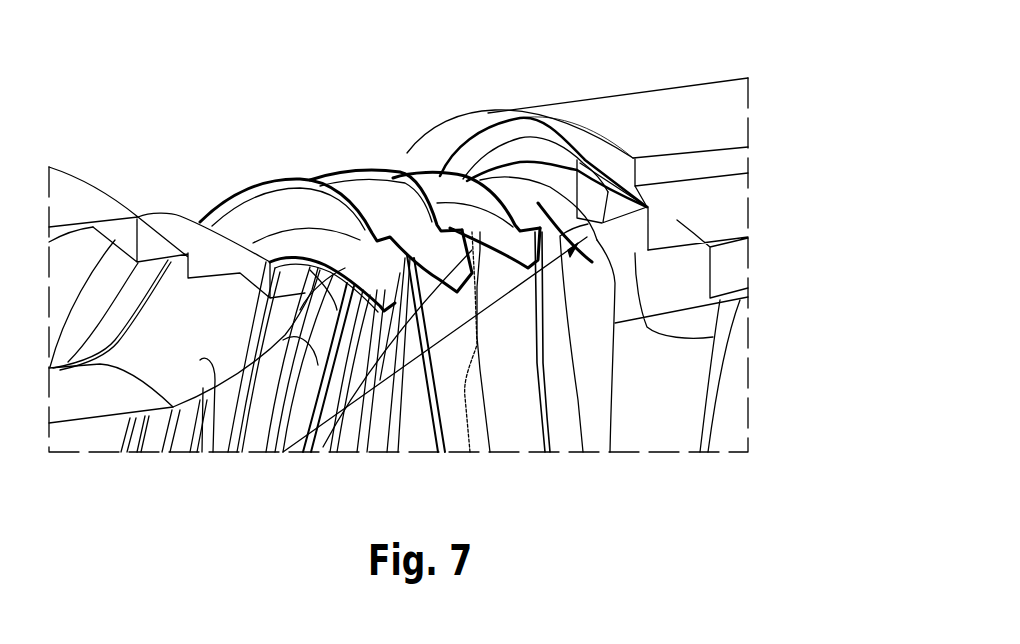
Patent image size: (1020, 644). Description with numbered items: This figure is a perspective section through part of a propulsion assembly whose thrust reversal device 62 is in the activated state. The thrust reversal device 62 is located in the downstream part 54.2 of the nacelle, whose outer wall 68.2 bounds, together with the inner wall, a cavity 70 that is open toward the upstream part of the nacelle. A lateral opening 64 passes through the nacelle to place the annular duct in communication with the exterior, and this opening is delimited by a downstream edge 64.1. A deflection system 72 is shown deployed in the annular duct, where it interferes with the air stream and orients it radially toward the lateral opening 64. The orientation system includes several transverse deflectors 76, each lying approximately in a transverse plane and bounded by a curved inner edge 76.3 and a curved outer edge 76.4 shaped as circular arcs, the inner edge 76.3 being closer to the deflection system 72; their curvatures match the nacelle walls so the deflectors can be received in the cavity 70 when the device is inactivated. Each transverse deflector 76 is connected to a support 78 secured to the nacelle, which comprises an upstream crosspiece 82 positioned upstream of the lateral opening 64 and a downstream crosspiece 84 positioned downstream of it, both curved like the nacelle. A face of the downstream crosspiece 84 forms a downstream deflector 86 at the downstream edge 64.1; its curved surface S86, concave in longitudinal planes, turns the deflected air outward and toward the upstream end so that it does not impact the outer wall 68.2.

The downstream part 54.2 is at (700, 100).
The thrust reversal device 62 is at (423, 181).
The lateral opening 64 is at (220, 149).
The downstream edge 64.1 is at (577, 175).
The outer wall 68.2 is at (494, 108).
The cavity 70 is at (740, 198).
The deflection system 72 is at (522, 426).
The transverse deflector 76 is at (423, 192).
The inner edge 76.3 is at (375, 330).
The outer edge 76.4 is at (340, 178).
The support 78 is at (170, 205).
The upstream crosspiece 82 is at (212, 425).
The downstream crosspiece 84 is at (713, 337).
The downstream deflector 86 is at (466, 385).
The curved surface S86 is at (580, 380).